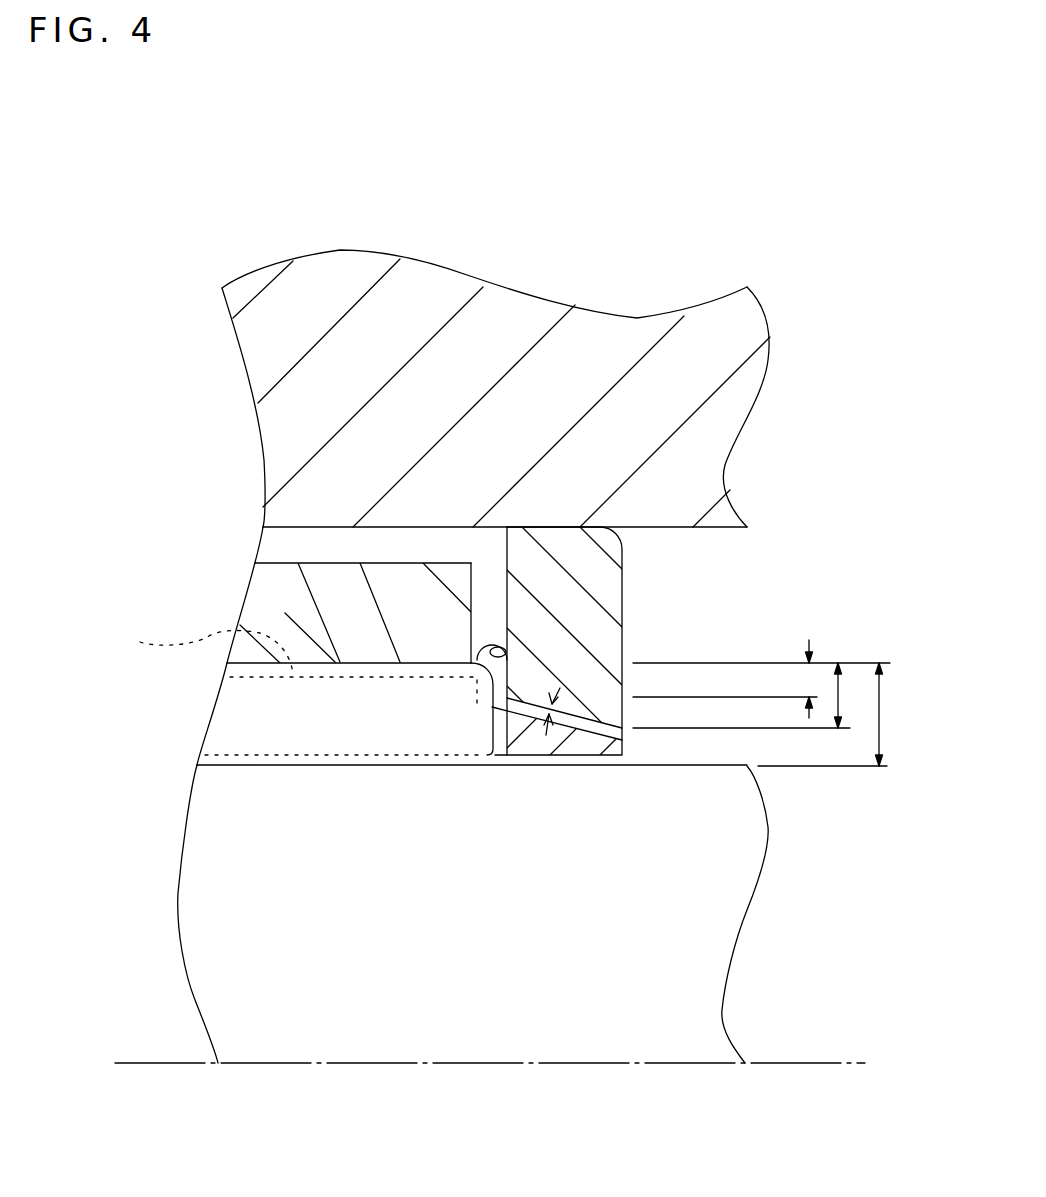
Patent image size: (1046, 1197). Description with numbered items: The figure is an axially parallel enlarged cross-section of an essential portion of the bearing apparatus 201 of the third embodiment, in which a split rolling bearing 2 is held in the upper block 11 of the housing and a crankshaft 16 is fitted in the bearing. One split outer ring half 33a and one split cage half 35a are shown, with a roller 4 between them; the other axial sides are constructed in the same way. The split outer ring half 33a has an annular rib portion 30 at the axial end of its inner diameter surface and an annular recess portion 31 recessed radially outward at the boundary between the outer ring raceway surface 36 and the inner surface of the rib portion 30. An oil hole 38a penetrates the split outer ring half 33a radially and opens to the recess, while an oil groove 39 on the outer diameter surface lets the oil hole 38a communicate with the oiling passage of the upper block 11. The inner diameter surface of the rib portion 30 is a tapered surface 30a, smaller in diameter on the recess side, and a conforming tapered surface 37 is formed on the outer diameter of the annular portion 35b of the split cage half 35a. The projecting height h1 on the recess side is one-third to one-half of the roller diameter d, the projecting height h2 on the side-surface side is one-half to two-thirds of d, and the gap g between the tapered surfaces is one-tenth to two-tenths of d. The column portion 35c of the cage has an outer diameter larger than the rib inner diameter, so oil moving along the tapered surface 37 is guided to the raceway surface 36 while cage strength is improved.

The upper block 11 is at (737, 335).
The split rolling bearing 2 is at (225, 553).
The crankshaft 16 is at (218, 965).
The bearing apparatus 201 is at (620, 257).
The oil groove 39 is at (345, 550).
The outer ring raceway surface 36 is at (353, 667).
The oil hole 38a is at (493, 590).
The annular recess portion 31 is at (507, 653).
The split outer ring half 33a is at (313, 610).
The column portion 35c is at (193, 650).
The roller 4 is at (230, 722).
The annular rib portion 30 is at (578, 612).
The tapered surface 30a is at (583, 717).
The tapered surface 37 is at (607, 728).
The annular portion 35b is at (527, 742).
The gap g is at (546, 735).
The split cage half 35a is at (502, 760).
The projecting height h1 is at (761, 679).
The projecting height h2 is at (751, 695).
The diameter d is at (826, 714).